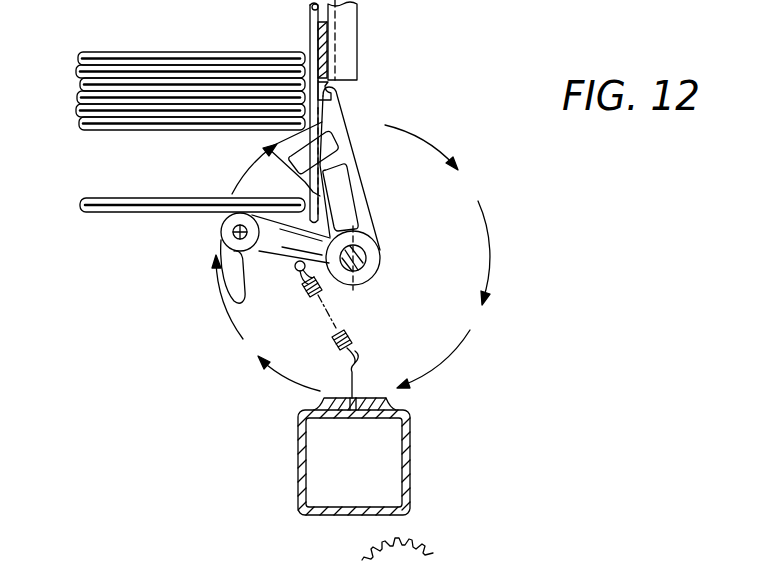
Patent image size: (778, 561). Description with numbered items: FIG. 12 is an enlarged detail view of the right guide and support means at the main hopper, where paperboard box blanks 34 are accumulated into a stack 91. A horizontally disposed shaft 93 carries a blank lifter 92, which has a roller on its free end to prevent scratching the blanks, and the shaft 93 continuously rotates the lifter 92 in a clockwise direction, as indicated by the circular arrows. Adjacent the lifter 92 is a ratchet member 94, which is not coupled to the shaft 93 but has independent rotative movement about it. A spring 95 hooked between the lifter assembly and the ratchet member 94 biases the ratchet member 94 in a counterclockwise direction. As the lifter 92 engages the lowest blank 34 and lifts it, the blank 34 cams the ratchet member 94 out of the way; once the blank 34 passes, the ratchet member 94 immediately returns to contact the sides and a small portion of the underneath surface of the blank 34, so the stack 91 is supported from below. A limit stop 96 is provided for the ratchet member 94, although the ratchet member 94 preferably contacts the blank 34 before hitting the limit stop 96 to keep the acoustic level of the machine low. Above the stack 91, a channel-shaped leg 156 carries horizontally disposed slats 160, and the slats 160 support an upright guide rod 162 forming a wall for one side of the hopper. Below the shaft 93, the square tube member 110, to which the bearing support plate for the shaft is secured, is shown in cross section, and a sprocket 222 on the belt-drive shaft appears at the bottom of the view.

The stack 91 is at (148, 52).
The box blank 34 is at (175, 175).
The upright guide rod 162 is at (307, 18).
The channel-shaped leg 156 is at (350, 32).
The slat 160 is at (325, 58).
The limit stop 96 is at (331, 92).
The ratchet member 94 is at (335, 158).
The shaft 93 is at (366, 260).
The blank lifter 92 is at (232, 289).
The spring 95 is at (312, 302).
The square tube member 110 is at (407, 442).
The sprocket 222 is at (425, 553).